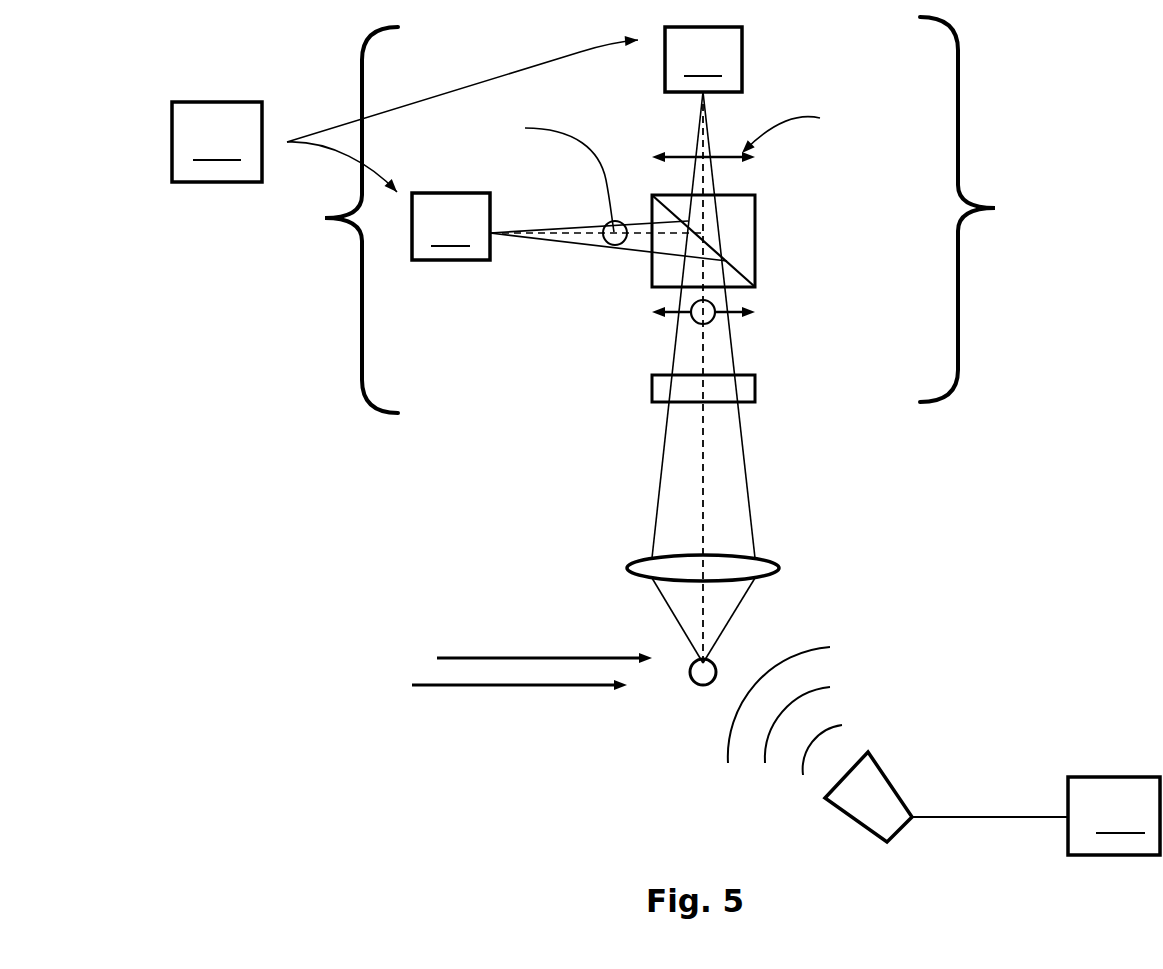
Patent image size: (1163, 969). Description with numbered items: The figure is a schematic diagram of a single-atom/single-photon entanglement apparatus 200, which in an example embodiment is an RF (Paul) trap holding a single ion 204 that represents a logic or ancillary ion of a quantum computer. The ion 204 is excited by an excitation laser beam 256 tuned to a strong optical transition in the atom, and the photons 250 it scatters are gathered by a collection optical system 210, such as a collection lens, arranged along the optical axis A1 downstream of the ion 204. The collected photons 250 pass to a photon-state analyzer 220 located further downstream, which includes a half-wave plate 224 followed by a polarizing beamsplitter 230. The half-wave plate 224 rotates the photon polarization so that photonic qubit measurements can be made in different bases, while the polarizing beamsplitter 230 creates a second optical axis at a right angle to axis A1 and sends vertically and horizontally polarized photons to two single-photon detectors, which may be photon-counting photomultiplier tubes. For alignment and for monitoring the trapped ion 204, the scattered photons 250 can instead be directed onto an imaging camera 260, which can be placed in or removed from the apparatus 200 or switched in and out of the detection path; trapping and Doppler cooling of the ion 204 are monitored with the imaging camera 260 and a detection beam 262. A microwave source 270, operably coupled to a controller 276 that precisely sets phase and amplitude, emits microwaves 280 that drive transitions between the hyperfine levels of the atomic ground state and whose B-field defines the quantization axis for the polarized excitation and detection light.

The single-atom/single-photon entanglement apparatus 200 is at (333, 815).
The ion 204 is at (710, 662).
The collection optical system 210 is at (627, 568).
The photon-state analyzer 220 is at (694, 287).
The half-wave plate 224 is at (663, 390).
The polarizing beamsplitter 230 is at (755, 248).
The photons 250 is at (745, 329).
The excitation laser beam 256 is at (487, 658).
The imaging camera 260 is at (405, 114).
The detection beam 262 is at (523, 685).
The microwave source 270 is at (893, 787).
The controller 276 is at (1114, 816).
The microwaves 280 is at (722, 780).
The optical axis A1 is at (703, 478).